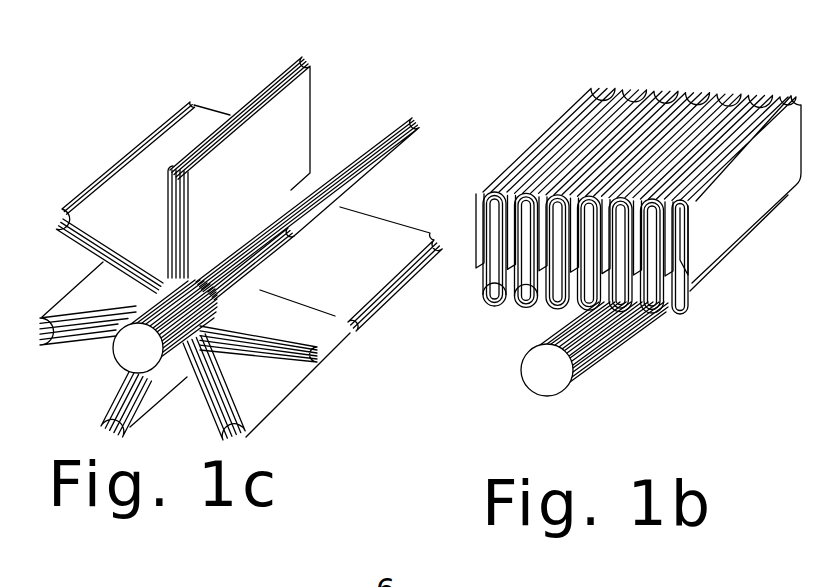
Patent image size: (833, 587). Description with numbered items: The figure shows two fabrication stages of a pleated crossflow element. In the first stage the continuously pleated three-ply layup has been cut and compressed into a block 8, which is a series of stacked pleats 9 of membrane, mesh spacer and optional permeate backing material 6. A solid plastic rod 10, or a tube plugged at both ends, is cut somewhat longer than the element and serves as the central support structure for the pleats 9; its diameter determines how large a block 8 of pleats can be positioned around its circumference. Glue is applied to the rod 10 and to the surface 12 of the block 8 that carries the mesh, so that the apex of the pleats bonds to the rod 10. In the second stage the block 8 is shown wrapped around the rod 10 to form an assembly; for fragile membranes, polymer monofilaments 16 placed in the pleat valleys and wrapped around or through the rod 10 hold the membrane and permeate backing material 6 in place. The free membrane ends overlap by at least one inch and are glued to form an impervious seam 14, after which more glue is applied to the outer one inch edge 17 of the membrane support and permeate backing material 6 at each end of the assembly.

In FIG. 1B, the permeate backing material 6 is at (564, 207).
In FIG. 1B, the block 8 is at (755, 202).
In FIG. 1B, the pleats 9 is at (760, 78).
In FIG. 1B, the rod 10 is at (603, 348).
In FIG. 1B, the surface 12 is at (527, 312).
In FIG. 1C, the seam 14 is at (317, 104).
In FIG. 1C, the polymer monofilaments 16 is at (355, 192).
In FIG. 1C, the outer edge 17 is at (310, 323).